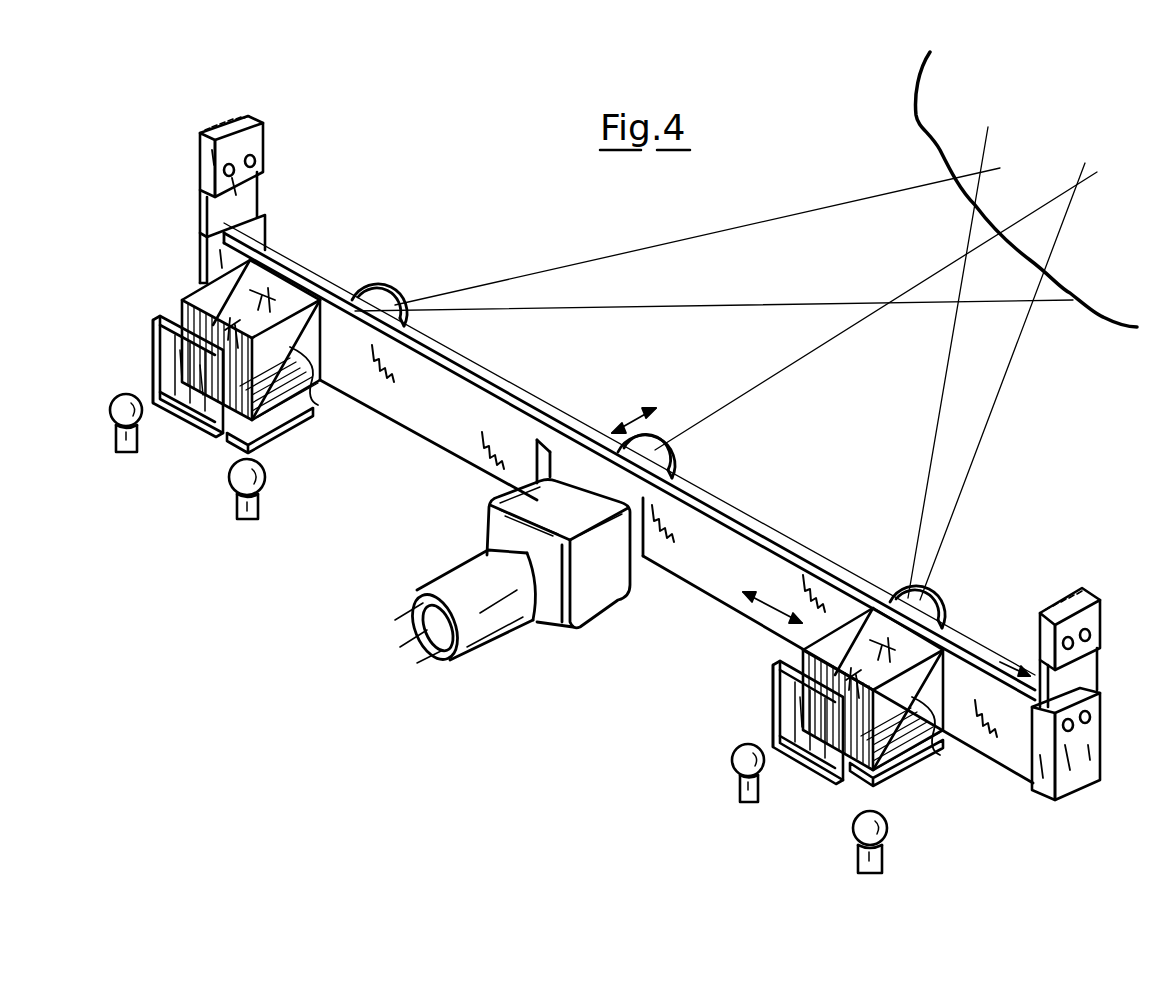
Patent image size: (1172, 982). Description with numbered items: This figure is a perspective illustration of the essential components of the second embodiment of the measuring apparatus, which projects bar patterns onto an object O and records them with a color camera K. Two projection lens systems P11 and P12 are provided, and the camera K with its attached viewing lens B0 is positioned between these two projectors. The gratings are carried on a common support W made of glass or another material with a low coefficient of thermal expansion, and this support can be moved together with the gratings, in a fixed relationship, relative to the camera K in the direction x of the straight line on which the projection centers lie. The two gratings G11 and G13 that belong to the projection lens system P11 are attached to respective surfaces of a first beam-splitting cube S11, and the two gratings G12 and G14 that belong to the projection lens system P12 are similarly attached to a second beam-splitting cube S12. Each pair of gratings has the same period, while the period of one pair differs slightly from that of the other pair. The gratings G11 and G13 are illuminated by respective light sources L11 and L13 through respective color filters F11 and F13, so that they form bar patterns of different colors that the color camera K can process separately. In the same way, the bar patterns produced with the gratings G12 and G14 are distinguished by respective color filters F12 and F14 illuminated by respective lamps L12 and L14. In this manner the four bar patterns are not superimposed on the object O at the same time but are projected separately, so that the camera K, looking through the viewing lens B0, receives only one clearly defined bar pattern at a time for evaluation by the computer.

The grating support W is at (420, 433).
The first beam-splitting cube S11 is at (322, 405).
The second beam-splitting cube S12 is at (912, 760).
The grating G11 is at (180, 298).
The grating G12 is at (800, 655).
The grating G13 is at (280, 437).
The grating G14 is at (940, 743).
The color filter F11 is at (155, 343).
The color filter F12 is at (770, 695).
The color filter F13 is at (237, 440).
The color filter F14 is at (862, 788).
The light source L11 is at (116, 437).
The lamp L12 is at (740, 779).
The light source L13 is at (258, 505).
The lamp L14 is at (883, 855).
The projection lens system P11 is at (380, 278).
The projection lens system P12 is at (906, 580).
The viewing lens B0 is at (673, 450).
The color camera K is at (612, 590).
The object O is at (912, 118).
The direction of the straight line x is at (1015, 653).